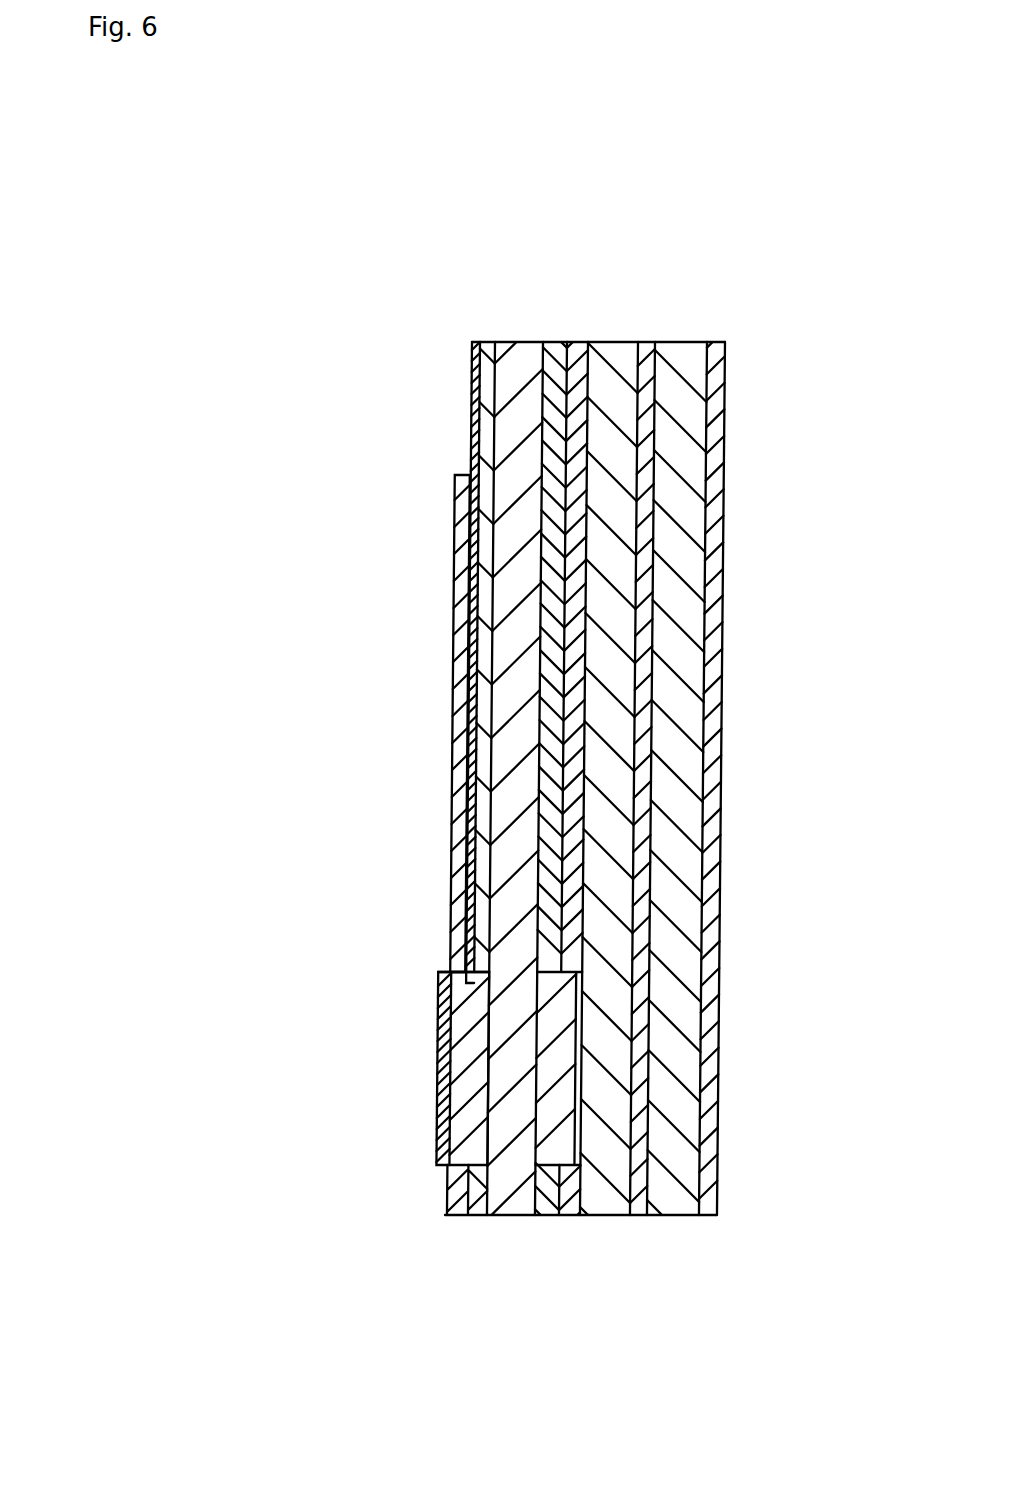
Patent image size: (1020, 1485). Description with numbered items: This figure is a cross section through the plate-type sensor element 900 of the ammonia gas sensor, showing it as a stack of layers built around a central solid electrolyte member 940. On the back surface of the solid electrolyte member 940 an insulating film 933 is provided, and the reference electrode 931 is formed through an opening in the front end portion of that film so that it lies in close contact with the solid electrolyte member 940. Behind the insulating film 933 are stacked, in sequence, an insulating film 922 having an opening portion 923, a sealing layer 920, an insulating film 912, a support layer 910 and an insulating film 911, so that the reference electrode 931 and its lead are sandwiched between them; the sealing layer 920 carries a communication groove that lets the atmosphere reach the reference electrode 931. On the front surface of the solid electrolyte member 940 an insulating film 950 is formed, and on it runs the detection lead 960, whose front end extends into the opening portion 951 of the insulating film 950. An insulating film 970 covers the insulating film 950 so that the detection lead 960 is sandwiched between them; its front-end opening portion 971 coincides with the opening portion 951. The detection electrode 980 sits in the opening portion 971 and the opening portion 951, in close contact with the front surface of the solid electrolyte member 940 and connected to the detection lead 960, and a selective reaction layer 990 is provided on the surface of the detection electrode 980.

The sensor element 900 is at (390, 308).
The support layer 910 is at (675, 1196).
The insulating film 911 is at (712, 346).
The insulating film 912 is at (634, 1192).
The sealing layer 920 is at (619, 346).
The insulating film 922 is at (577, 368).
The opening portion 923 is at (580, 1164).
The reference electrode 931 is at (546, 1172).
The insulating film 933 is at (553, 368).
The solid electrolyte member 940 is at (515, 372).
The insulating film 950 is at (488, 366).
The opening portion 951 is at (437, 1017).
The detection lead 960 is at (474, 379).
The insulating film 970 is at (466, 588).
The opening portion 971 is at (441, 988).
The detection electrode 980 is at (452, 1130).
The selective reaction layer 990 is at (440, 1082).